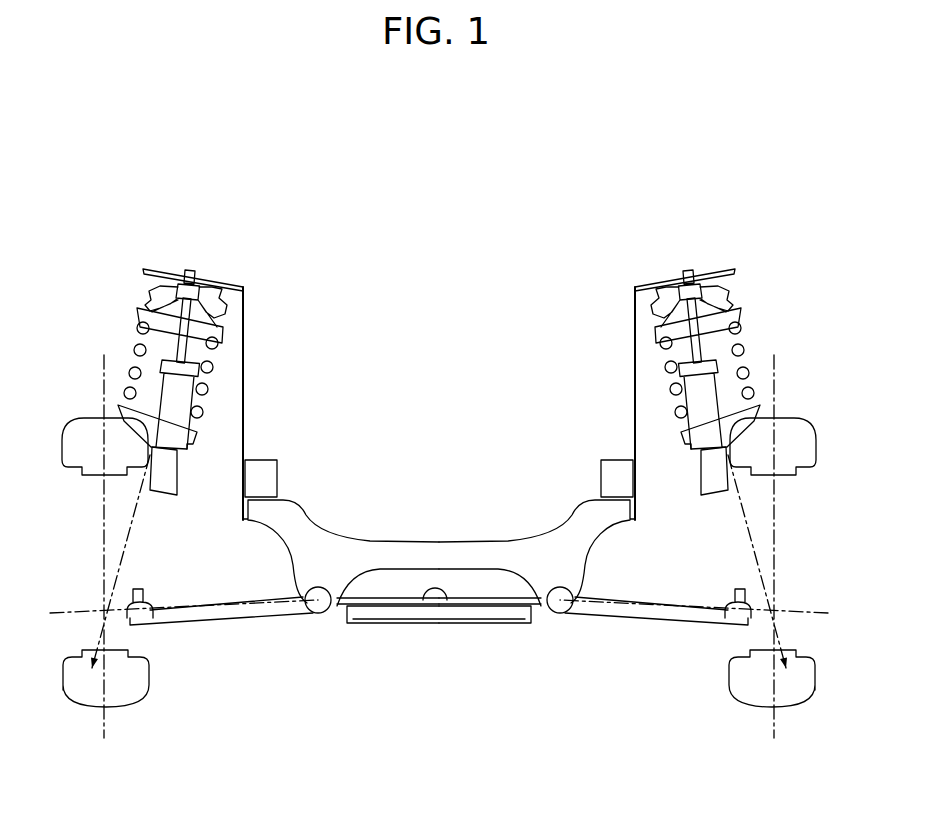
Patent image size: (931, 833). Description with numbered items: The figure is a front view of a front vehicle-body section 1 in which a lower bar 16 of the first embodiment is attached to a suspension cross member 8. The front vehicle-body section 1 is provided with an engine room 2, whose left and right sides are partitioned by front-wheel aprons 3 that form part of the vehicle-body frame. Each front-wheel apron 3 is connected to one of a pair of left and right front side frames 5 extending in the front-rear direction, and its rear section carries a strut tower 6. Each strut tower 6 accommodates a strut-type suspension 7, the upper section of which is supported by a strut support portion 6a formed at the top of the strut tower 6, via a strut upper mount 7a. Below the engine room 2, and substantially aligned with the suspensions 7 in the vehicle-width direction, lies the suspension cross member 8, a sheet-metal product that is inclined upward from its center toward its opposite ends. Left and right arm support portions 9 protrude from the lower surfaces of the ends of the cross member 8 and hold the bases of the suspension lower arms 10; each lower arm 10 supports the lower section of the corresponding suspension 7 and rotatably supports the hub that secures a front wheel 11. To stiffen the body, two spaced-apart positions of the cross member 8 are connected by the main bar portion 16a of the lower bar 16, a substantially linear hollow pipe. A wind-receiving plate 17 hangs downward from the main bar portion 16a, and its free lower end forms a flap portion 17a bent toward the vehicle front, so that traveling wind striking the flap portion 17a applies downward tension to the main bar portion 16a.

The front vehicle-body section 1 is at (683, 226).
The engine room 2 is at (429, 415).
The front-wheel apron 3 is at (243, 420).
The front side frame 5 is at (266, 460).
The strut tower 6 is at (243, 318).
The strut support portion 6a is at (220, 286).
The strut-type suspension 7 is at (118, 321).
The strut upper mount 7a is at (150, 293).
The suspension cross member 8 is at (438, 541).
The arm support portion 9 is at (325, 613).
The suspension lower arm 10 is at (221, 625).
The front wheel 11 is at (92, 708).
The lower bar 16 is at (498, 643).
The main bar portion 16a is at (444, 592).
The wind-receiving plate 17 is at (370, 614).
The flap portion 17a is at (412, 621).